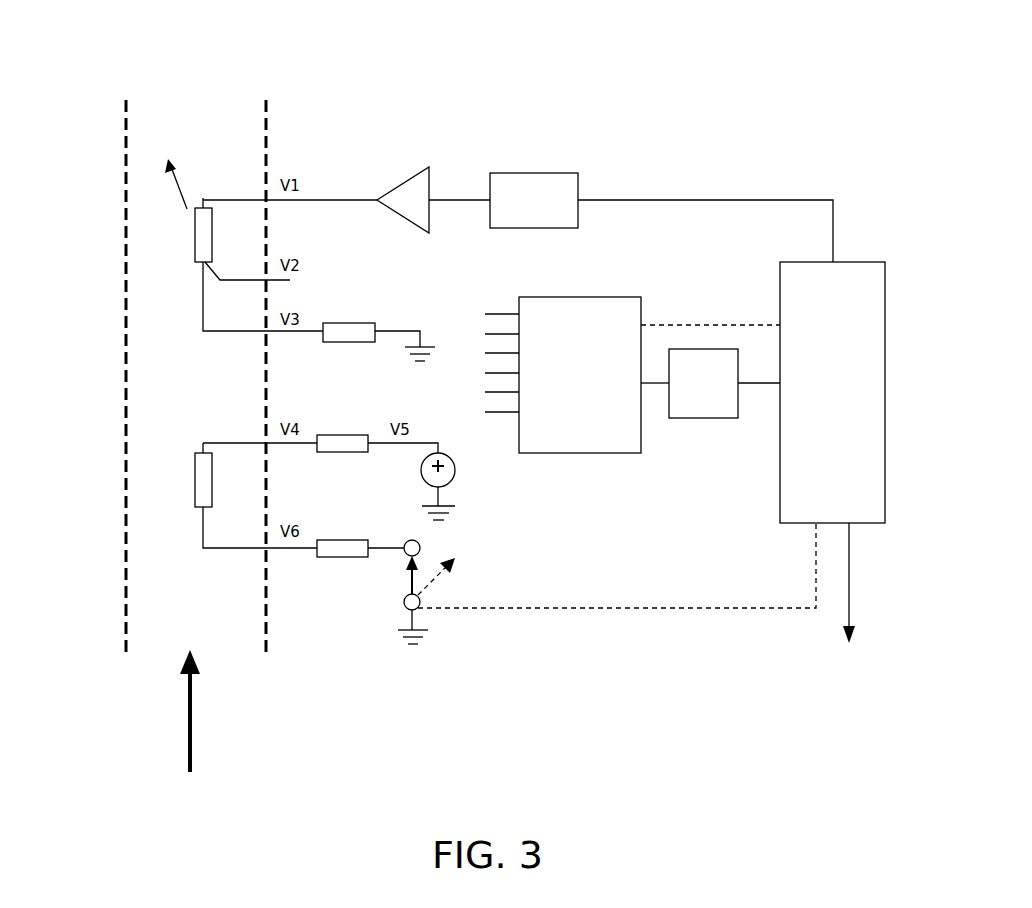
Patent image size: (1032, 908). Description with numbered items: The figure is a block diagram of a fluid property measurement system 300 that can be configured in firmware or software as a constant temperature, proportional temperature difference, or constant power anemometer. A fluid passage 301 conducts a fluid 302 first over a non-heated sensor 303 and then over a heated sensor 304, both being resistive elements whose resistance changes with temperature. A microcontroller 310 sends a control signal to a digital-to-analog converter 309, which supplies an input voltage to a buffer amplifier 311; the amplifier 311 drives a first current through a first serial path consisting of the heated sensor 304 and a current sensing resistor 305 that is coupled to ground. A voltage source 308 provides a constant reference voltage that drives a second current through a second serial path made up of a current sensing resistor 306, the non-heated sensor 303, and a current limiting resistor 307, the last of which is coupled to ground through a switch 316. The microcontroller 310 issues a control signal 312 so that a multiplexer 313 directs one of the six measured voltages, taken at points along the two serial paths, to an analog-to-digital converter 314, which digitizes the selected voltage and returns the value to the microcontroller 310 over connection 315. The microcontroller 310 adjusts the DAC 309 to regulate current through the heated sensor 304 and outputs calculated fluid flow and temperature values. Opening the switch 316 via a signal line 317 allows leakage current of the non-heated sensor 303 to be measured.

The fluid property measurement system 300 is at (362, 108).
The fluid passage 301 is at (267, 112).
The fluid 302 is at (199, 602).
The non-heated sensor 303 is at (202, 490).
The heated sensor 304 is at (203, 246).
The current sensing resistor 305 is at (362, 335).
The current sensing resistor 306 is at (352, 440).
The current limiting resistor 307 is at (348, 552).
The voltage source 308 is at (442, 477).
The digital-to-analog converter 309 is at (553, 193).
The microcontroller 310 is at (845, 303).
The buffer amplifier 311 is at (411, 198).
The control signal 312 is at (698, 325).
The multiplexer 313 is at (588, 327).
The analog-to-digital converter 314 is at (710, 362).
The ADC to microcontroller connection 315 is at (757, 380).
The switch 316 is at (416, 607).
The signal line 317 is at (652, 608).